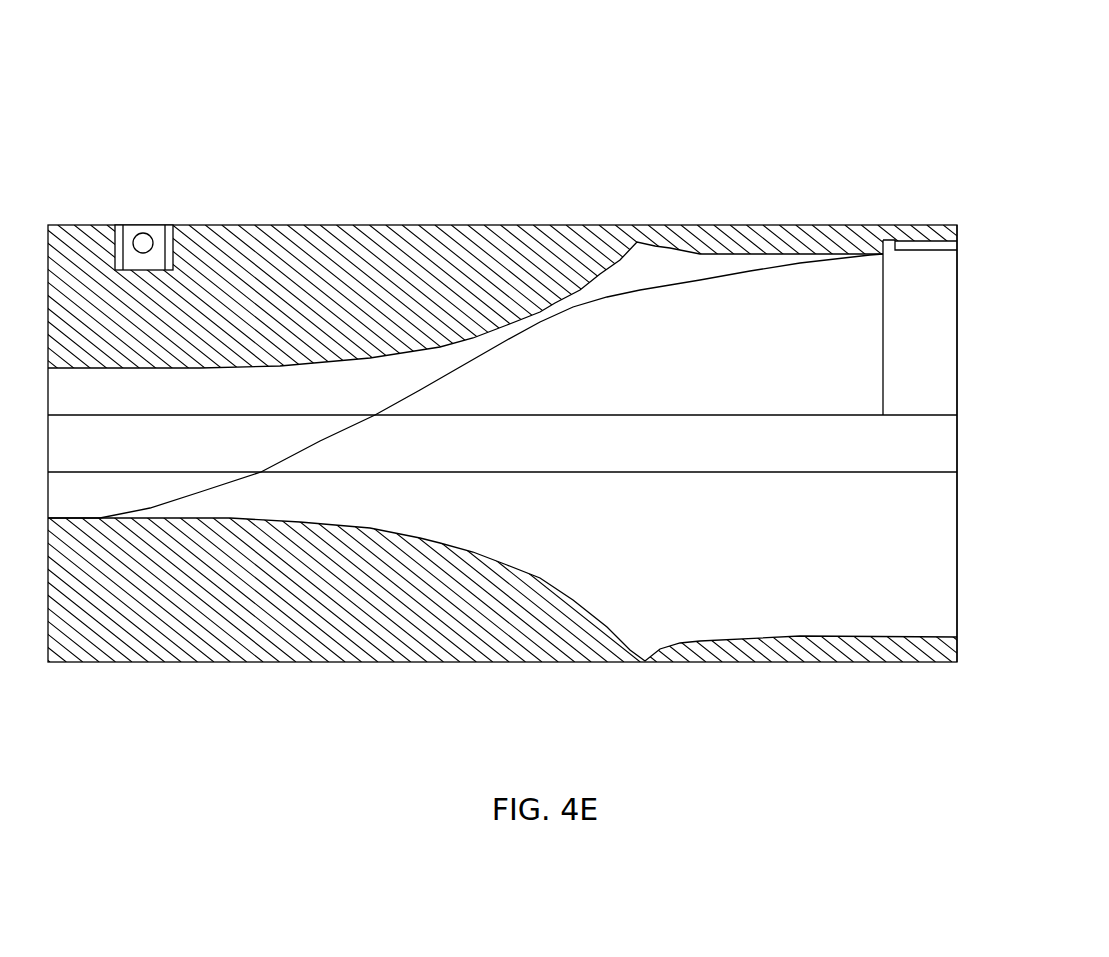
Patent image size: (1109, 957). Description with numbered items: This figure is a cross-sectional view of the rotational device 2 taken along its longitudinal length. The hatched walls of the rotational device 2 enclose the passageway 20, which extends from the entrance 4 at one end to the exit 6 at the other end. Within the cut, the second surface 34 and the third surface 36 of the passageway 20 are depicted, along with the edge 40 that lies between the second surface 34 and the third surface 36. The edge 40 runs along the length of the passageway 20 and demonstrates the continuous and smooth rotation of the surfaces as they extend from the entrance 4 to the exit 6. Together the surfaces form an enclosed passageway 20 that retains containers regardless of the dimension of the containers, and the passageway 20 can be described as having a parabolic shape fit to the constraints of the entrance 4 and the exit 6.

The rotational device 2 is at (750, 125).
The entrance 4 is at (50, 494).
The exit 6 is at (957, 568).
The passageway 20 is at (590, 347).
The second surface 34 is at (440, 400).
The third surface 36 is at (207, 393).
The edge 40 is at (318, 445).